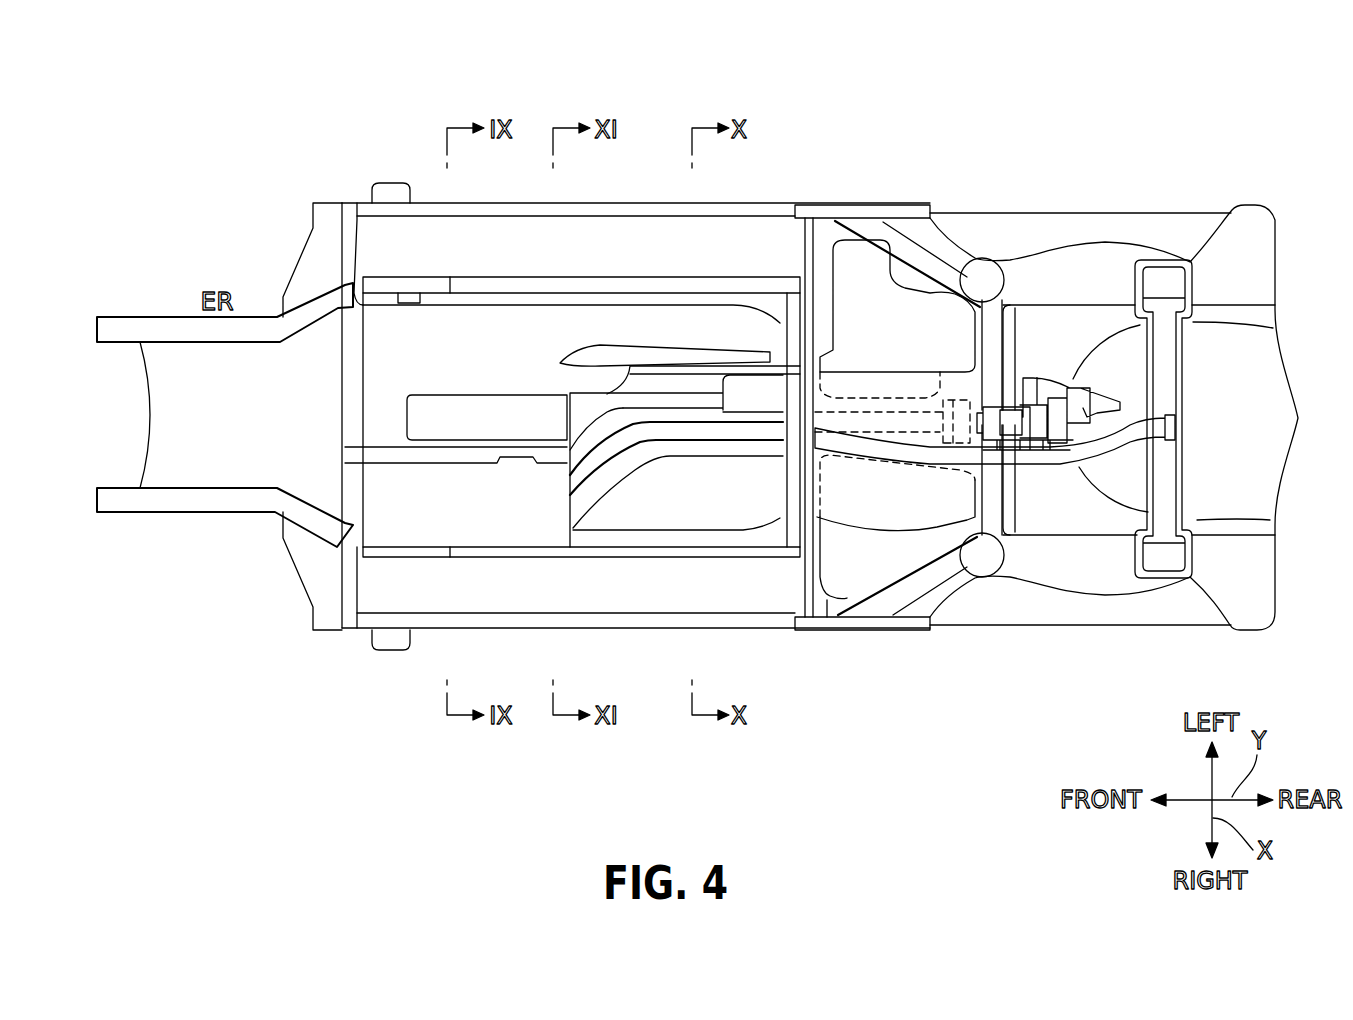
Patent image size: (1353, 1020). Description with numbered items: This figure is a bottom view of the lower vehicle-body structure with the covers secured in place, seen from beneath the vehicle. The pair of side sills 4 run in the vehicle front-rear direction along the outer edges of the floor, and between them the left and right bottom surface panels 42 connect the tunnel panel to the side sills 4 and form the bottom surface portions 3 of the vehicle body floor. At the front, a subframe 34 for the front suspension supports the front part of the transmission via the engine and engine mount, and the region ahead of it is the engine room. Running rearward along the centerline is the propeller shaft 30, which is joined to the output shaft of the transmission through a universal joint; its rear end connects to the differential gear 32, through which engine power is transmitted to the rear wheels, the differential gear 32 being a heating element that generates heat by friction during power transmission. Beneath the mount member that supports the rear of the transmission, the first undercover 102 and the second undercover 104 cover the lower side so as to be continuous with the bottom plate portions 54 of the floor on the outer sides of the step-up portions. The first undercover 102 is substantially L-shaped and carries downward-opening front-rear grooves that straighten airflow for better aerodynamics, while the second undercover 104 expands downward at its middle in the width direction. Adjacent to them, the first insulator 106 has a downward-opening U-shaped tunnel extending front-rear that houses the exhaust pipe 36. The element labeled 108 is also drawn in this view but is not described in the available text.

The bottom surface portion 3 is at (390, 87).
The side sill 4 is at (640, 205).
The propeller shaft 30 is at (895, 412).
The differential gear 32 is at (1042, 410).
The subframe 34 is at (158, 327).
The exhaust pipe 36 is at (743, 432).
The bottom surface panel 42 is at (398, 172).
The bottom plate portion 54 is at (372, 240).
The first undercover 102 is at (457, 343).
The second undercover 104 is at (507, 508).
The first insulator 106 is at (657, 508).
The reinforcing member 108 is at (855, 268).